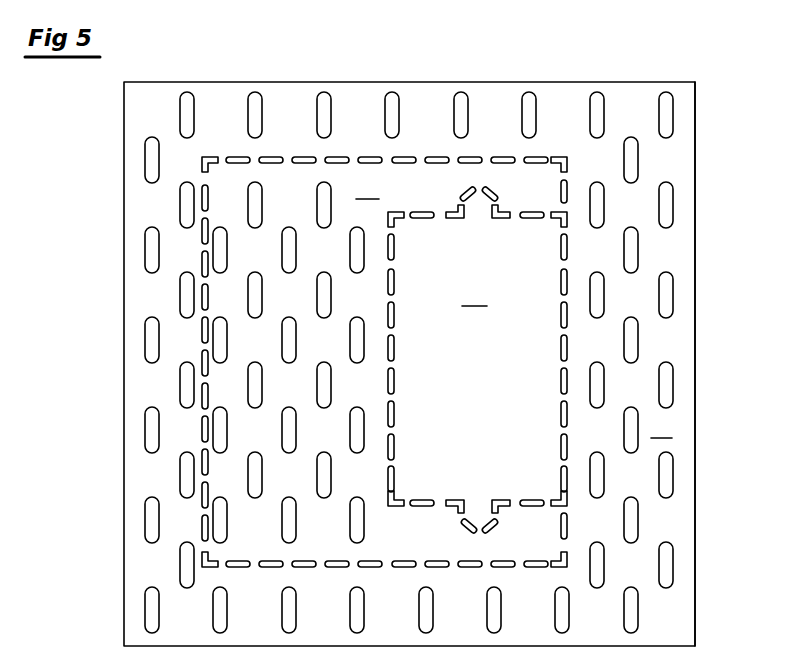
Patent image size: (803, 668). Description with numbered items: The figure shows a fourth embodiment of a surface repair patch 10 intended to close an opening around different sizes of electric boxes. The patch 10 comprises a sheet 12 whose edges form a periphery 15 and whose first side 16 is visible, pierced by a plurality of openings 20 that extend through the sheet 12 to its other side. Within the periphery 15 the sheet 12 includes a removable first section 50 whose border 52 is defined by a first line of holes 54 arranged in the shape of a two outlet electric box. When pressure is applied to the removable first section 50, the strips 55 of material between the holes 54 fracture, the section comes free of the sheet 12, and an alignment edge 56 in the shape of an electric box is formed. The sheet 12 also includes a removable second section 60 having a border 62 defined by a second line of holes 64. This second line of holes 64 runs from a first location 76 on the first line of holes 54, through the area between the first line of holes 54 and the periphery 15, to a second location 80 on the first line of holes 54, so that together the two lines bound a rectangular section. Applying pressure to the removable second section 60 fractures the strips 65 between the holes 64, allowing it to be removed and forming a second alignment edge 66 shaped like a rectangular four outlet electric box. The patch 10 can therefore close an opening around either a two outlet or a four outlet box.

The surface repair patch 10 is at (394, 341).
The sheet 12 is at (355, 103).
The periphery 15 is at (697, 265).
The first side 16 is at (660, 424).
The openings 20 is at (667, 110).
The removable first section 50 is at (473, 293).
The border 52 is at (403, 362).
The first line of holes 54 is at (563, 405).
The strips 55 is at (566, 362).
The alignment edge 56 is at (553, 250).
The removable second section 60 is at (366, 187).
The border 62 is at (289, 168).
The second line of holes 64 is at (367, 563).
The strips 65 is at (421, 567).
The second alignment edge 66 is at (233, 147).
The first location 76 is at (564, 213).
The second location 80 is at (568, 509).